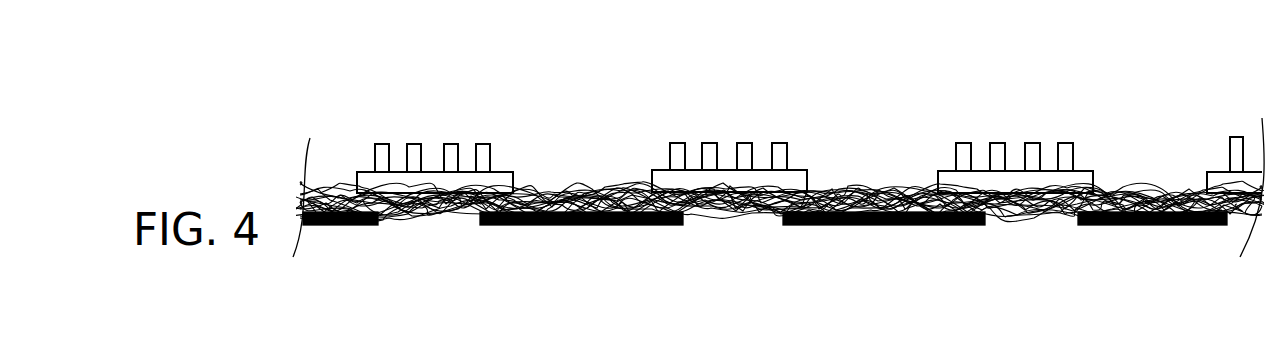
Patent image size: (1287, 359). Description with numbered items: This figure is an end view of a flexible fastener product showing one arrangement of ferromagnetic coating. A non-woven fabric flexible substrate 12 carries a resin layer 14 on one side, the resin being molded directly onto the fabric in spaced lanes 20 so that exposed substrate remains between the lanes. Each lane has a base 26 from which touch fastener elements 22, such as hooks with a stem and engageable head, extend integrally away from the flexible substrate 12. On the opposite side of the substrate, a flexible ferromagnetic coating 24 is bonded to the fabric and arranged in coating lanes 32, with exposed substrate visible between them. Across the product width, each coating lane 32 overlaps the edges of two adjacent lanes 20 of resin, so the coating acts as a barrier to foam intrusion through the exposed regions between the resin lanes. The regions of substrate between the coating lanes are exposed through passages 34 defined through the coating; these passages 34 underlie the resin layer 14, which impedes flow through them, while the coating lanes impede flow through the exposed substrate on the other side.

The flexible substrate 12 is at (1150, 192).
The resin layer 14 is at (500, 172).
The lanes of the resin layer 20 is at (906, 129).
The touch fastener elements 22 is at (475, 144).
The flexible ferromagnetic coating 24 is at (1193, 225).
The bases of the lanes of the resin layer 26 is at (1085, 170).
The coating lanes 32 is at (783, 226).
The passages 34 is at (436, 240).